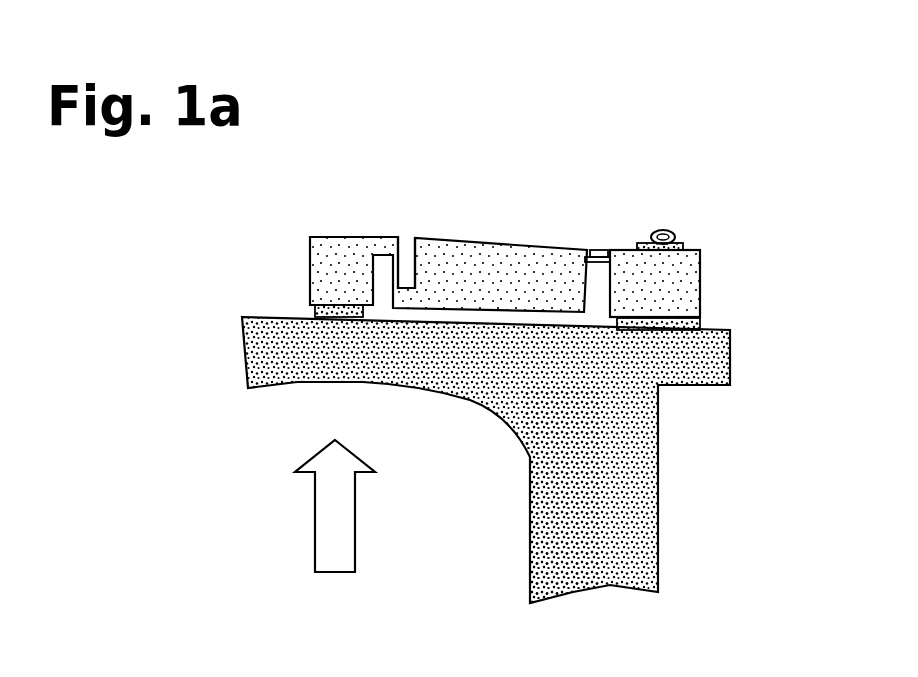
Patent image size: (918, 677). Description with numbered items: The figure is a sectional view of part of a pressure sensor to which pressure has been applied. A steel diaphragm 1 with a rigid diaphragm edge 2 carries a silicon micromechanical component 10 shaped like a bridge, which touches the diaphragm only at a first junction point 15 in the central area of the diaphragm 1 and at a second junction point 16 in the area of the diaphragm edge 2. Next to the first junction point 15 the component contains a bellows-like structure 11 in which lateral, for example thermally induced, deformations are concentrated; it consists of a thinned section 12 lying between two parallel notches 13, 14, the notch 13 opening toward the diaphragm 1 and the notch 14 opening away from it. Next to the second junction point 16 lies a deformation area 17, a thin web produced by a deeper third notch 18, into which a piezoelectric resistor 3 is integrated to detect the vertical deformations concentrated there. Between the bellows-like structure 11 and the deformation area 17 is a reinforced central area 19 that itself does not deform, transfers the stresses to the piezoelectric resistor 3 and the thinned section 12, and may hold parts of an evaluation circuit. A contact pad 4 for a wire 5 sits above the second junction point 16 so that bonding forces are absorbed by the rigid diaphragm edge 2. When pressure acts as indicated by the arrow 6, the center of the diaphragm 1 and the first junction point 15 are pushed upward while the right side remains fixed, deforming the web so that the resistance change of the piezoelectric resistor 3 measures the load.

The diaphragm 1 is at (485, 460).
The diaphragm edge 2 is at (722, 355).
The piezoelectric resistor 3 is at (598, 249).
The contact pad 4 is at (680, 243).
The wire 5 is at (699, 201).
The arrow 6 is at (307, 506).
The micromechanical component 10 is at (530, 183).
The bellows-like structure 11 is at (428, 222).
The thinned section 12 is at (397, 270).
The notch 13 is at (377, 262).
The notch 14 is at (411, 256).
The first junction point 15 is at (325, 312).
The second junction point 16 is at (687, 325).
The deformation area 17 is at (698, 283).
The third notch 18 is at (592, 268).
The reinforced central area 19 is at (649, 444).